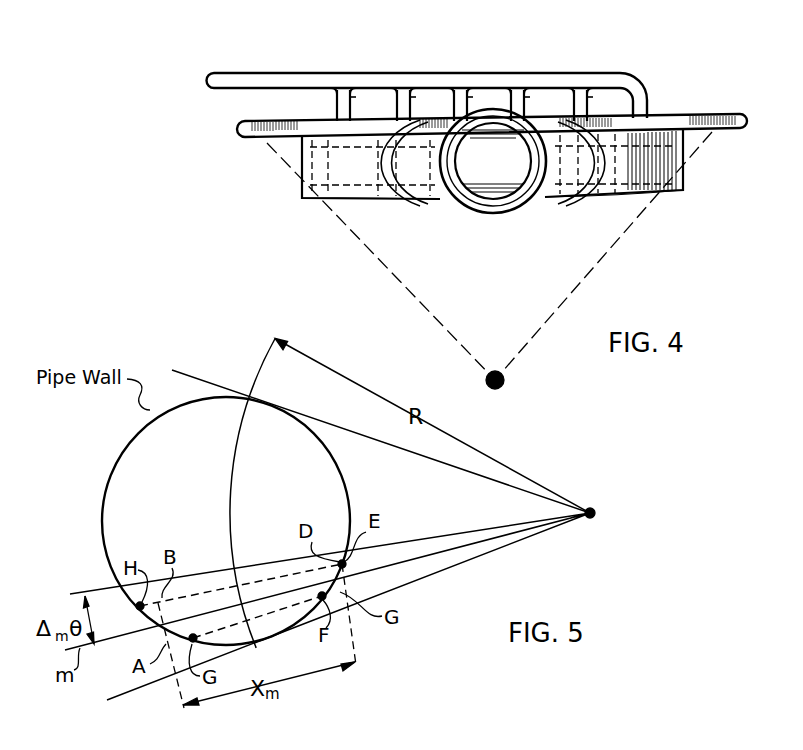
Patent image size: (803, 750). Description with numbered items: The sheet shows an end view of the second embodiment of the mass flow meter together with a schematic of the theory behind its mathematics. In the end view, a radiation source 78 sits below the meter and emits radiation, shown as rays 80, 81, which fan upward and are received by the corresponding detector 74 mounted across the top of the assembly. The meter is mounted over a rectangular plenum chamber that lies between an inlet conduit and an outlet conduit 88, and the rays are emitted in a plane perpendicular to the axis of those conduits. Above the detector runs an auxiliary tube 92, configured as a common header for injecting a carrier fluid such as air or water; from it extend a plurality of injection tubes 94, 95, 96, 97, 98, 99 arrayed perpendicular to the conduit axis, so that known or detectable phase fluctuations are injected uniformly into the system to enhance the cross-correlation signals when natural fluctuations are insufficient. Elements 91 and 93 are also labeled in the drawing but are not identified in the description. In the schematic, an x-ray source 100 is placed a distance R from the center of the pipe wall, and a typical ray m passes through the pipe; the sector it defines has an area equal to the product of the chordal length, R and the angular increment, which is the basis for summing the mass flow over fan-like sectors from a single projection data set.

In FIG. 4, the auxiliary tube 92 is at (306, 73).
In FIG. 4, the injection tube 94 is at (352, 95).
In FIG. 4, the injection tube 95 is at (412, 95).
In FIG. 4, the injection tube 96 is at (470, 95).
In FIG. 4, the injection tube 97 is at (526, 92).
In FIG. 4, the injection tube 98 is at (588, 93).
In FIG. 4, the injection tube 99 is at (646, 90).
In FIG. 4, the detector 74 is at (706, 112).
In FIG. 4, the transducer housing 91 is at (670, 155).
In FIG. 4, the outlet conduit 88 is at (506, 205).
In FIG. 4, the bore opening 93 is at (474, 178).
In FIG. 4, the ray 80 is at (424, 292).
In FIG. 4, the ray 81 is at (586, 288).
In FIG. 4, the radiation source 78 is at (505, 380).
In FIG. 5, the source 100 is at (598, 511).